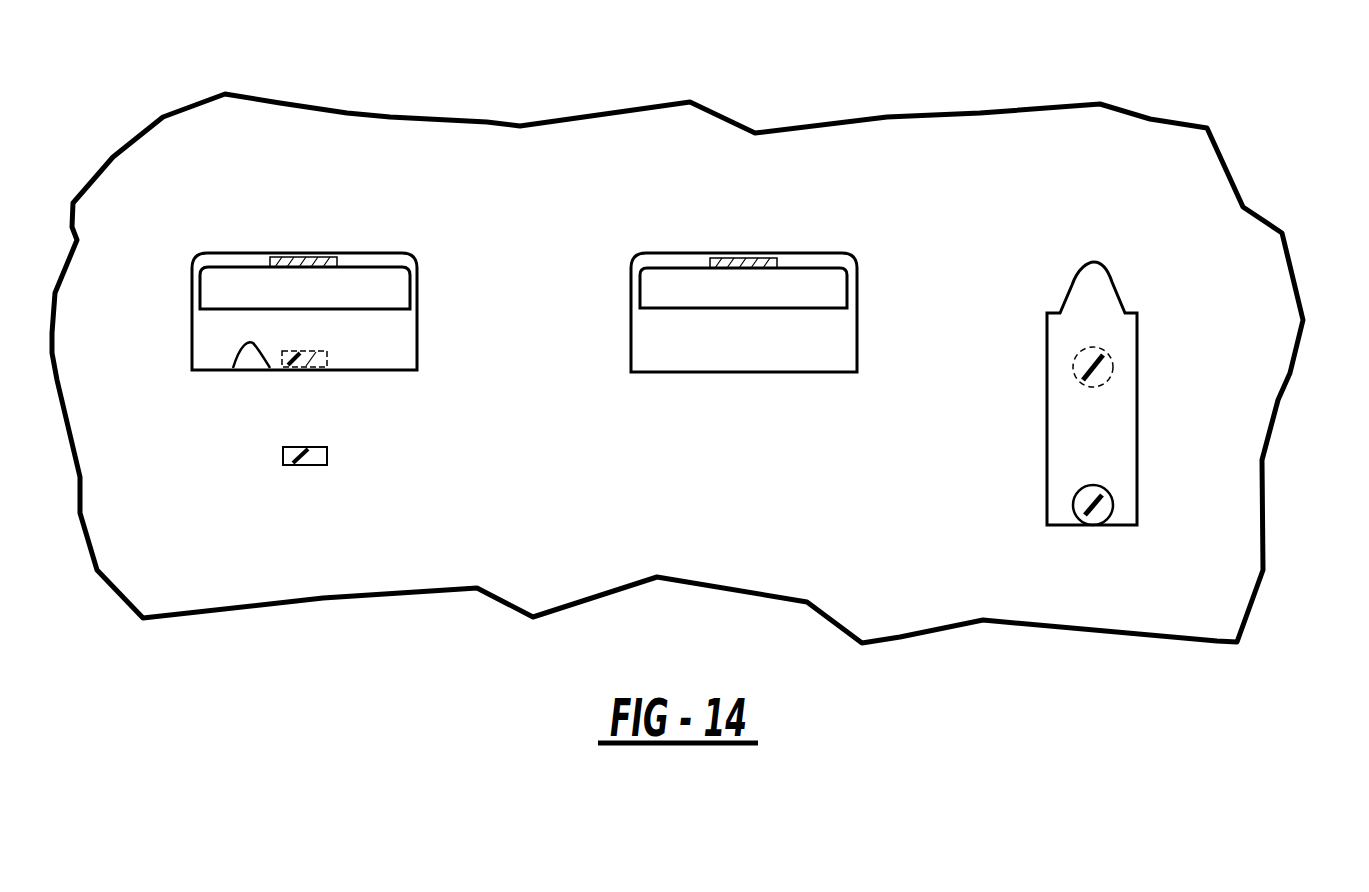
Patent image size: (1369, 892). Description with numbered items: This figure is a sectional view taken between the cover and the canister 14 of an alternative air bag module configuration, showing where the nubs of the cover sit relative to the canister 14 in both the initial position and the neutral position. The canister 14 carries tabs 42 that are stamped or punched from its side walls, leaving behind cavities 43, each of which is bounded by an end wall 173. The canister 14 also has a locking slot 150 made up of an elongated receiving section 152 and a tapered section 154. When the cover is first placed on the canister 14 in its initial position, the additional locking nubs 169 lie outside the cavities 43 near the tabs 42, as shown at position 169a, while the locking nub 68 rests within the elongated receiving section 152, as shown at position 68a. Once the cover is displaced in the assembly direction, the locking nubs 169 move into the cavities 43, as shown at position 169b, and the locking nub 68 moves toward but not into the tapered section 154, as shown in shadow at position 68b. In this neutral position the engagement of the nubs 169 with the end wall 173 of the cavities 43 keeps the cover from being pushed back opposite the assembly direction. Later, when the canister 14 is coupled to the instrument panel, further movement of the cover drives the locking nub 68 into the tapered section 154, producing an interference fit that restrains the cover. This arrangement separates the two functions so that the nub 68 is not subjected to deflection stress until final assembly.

The canister 14 is at (890, 132).
The tab 42 is at (352, 293).
The cavity 43 is at (223, 330).
The locking nub 68 is at (1082, 487).
The locking nub position 68a is at (1098, 513).
The locking nub position 68b is at (1097, 347).
The locking slot 150 is at (1136, 359).
The elongated receiving section 152 is at (1088, 442).
The tapered section 154 is at (1093, 293).
The locking nub 169 is at (302, 468).
The locking nub position 169a is at (327, 455).
The locking nub position 169b is at (327, 357).
The end wall 173 is at (233, 368).